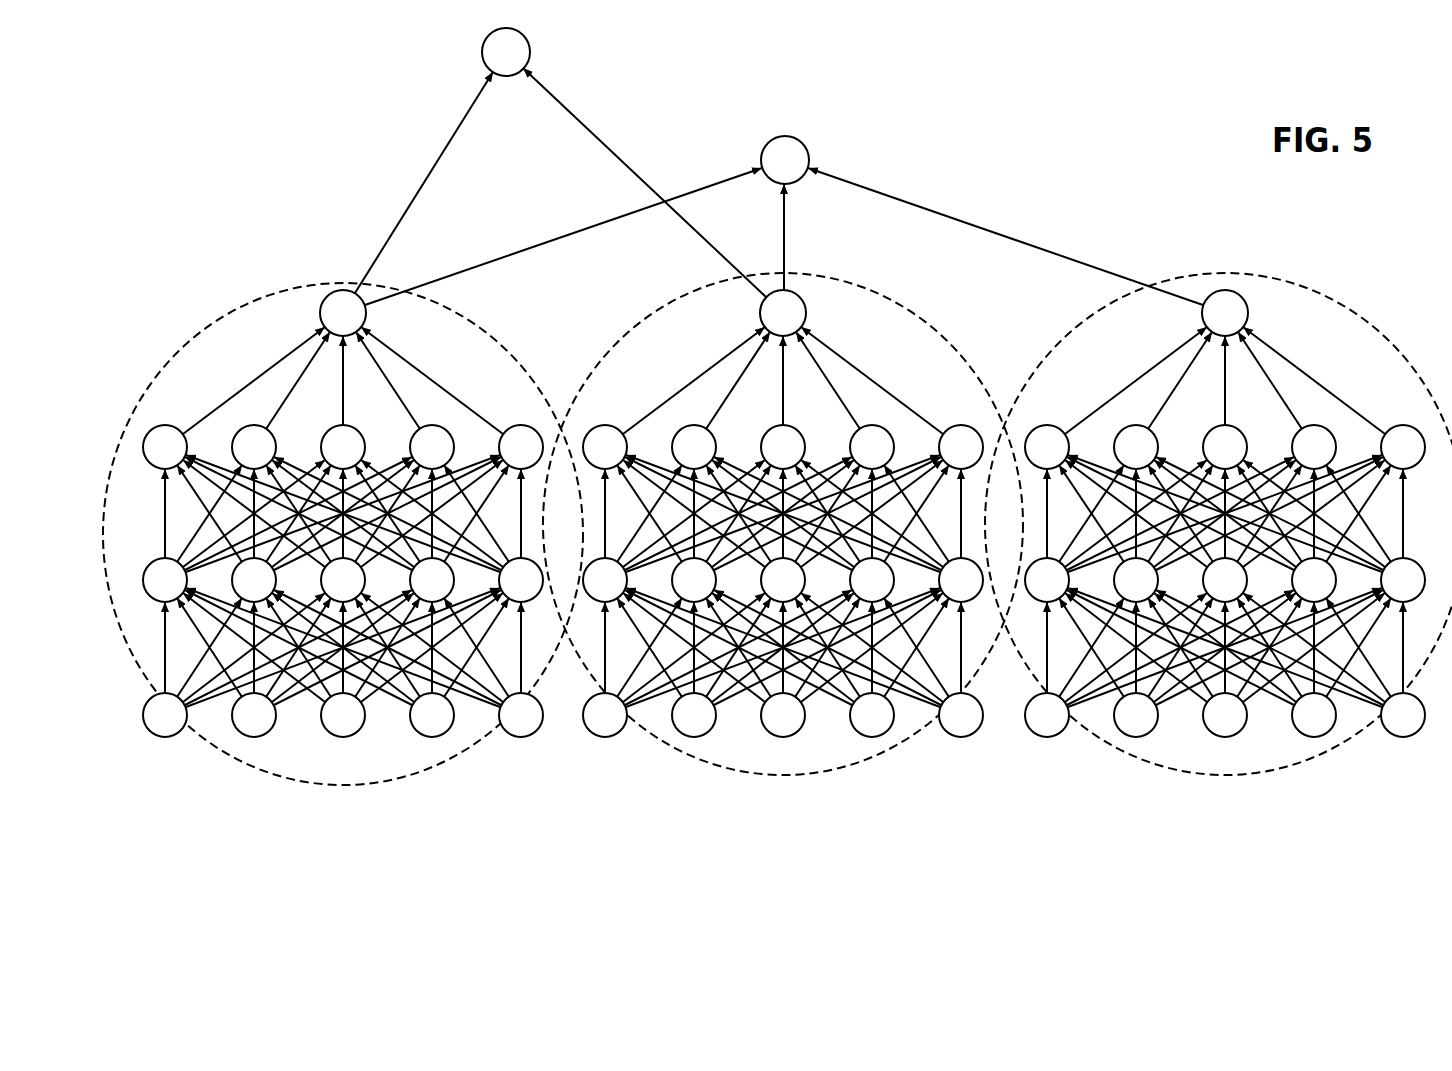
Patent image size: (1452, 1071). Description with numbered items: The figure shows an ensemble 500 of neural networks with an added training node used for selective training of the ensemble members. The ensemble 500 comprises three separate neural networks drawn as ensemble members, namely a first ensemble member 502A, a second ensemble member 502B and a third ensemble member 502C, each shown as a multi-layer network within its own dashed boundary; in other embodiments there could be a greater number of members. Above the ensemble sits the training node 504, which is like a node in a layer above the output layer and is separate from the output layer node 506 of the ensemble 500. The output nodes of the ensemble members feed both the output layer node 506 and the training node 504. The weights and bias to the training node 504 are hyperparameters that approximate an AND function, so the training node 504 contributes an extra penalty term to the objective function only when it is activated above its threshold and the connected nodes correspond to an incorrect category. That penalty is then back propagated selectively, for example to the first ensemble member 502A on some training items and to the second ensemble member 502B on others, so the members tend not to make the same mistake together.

The ensemble 500 is at (777, 449).
The first ensemble member 502A is at (343, 523).
The second ensemble member 502B is at (783, 503).
The third ensemble member 502C is at (1218, 508).
The training node 504 is at (560, 155).
The output layer node 506 is at (784, 204).